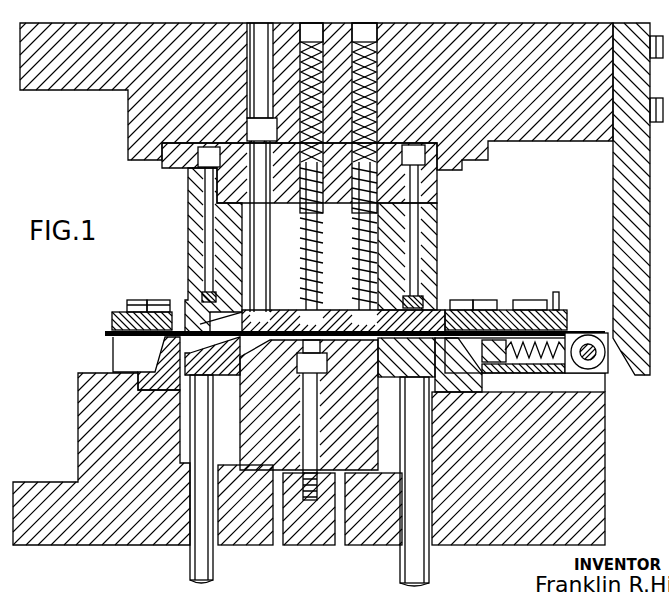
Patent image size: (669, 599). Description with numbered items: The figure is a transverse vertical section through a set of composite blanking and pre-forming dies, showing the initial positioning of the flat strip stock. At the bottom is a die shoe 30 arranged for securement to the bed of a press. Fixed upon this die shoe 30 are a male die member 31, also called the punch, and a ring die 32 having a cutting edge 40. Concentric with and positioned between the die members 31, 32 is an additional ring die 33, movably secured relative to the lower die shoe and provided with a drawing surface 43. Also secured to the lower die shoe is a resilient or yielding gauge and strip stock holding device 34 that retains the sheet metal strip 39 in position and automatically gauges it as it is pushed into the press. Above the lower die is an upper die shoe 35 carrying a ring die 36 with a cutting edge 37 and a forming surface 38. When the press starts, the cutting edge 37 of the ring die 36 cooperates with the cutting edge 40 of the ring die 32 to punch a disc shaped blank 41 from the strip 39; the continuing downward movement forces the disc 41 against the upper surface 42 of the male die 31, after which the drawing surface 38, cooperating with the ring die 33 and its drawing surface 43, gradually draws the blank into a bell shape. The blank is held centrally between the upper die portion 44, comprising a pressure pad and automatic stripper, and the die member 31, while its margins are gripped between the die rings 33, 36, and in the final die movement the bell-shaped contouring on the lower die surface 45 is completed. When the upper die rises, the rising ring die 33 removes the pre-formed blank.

The die shoe 30 is at (592, 468).
The male die member 31 is at (248, 440).
The ring die 32 is at (158, 358).
The additional ring die 33 is at (250, 394).
The gauge and strip stock holding device 34 is at (540, 312).
The upper die shoe 35 is at (528, 40).
The ring die 36 is at (432, 296).
The cutting edge 37 is at (440, 310).
The forming surface 38 is at (208, 294).
The sheet metal strip 39 is at (112, 332).
The cutting edge 40 is at (185, 312).
The disc shaped blank 41 is at (337, 307).
The upper surface 42 is at (266, 300).
The drawing surface 43 is at (192, 351).
The upper die portion 44 is at (281, 316).
The lower die surface 45 is at (386, 378).